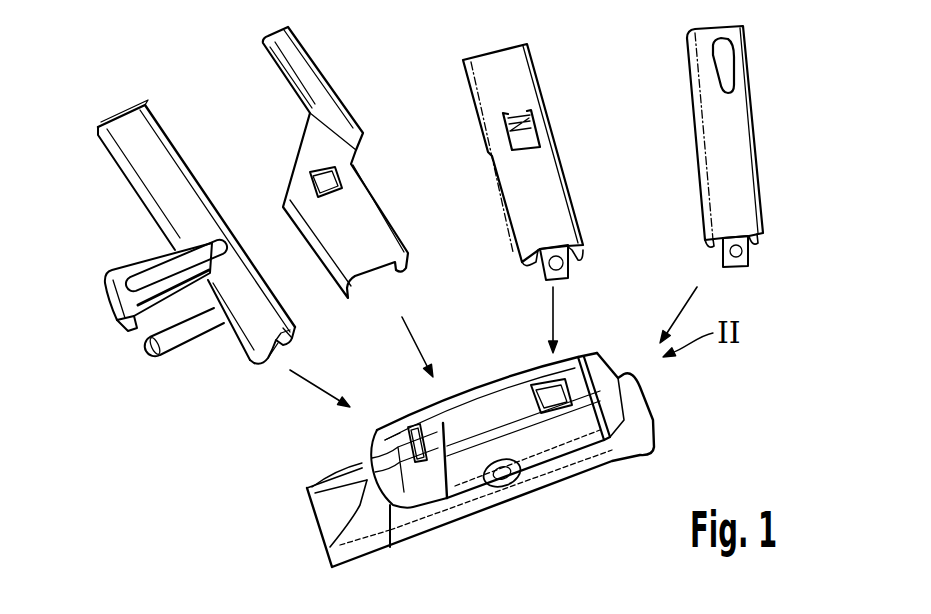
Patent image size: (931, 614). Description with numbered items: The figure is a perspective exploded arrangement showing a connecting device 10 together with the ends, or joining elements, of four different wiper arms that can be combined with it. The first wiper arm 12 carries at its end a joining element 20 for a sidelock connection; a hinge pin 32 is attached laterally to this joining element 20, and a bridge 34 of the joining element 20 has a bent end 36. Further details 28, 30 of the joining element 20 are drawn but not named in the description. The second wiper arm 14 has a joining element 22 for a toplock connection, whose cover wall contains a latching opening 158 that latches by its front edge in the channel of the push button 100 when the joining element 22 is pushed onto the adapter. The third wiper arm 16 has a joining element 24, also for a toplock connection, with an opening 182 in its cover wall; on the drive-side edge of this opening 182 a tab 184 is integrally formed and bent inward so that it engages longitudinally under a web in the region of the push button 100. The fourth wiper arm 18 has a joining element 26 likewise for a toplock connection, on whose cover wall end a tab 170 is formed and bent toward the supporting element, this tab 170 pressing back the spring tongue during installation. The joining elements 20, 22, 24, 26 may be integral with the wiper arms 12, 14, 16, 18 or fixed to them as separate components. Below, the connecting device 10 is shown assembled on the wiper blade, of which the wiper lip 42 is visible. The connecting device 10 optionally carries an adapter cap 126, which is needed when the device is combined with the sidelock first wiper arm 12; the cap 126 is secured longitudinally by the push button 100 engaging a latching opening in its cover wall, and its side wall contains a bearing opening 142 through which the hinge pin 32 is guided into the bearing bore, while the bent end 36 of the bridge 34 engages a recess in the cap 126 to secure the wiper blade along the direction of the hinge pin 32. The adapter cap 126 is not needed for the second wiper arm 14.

The connecting device 10 is at (516, 435).
The first wiper arm 12 is at (212, 236).
The second wiper arm 14 is at (328, 162).
The third wiper arm 16 is at (532, 133).
The fourth wiper arm 18 is at (691, 135).
The joining element 20 is at (158, 145).
The joining element 22 is at (365, 213).
The joining element 24 is at (563, 177).
The joining element 26 is at (723, 185).
The end section 28 is at (243, 358).
The side wall 30 is at (293, 313).
The hinge pin 32 is at (156, 357).
The bridge 34 is at (150, 263).
The bent end 36 is at (120, 326).
The wiper lip 42 is at (365, 513).
The push button 100 is at (485, 435).
The adapter cap 126 is at (493, 410).
The bearing opening 142 is at (512, 480).
The latching opening 158 is at (340, 183).
The tab 170 is at (567, 267).
The opening 182 is at (530, 142).
The tab 184 is at (512, 127).